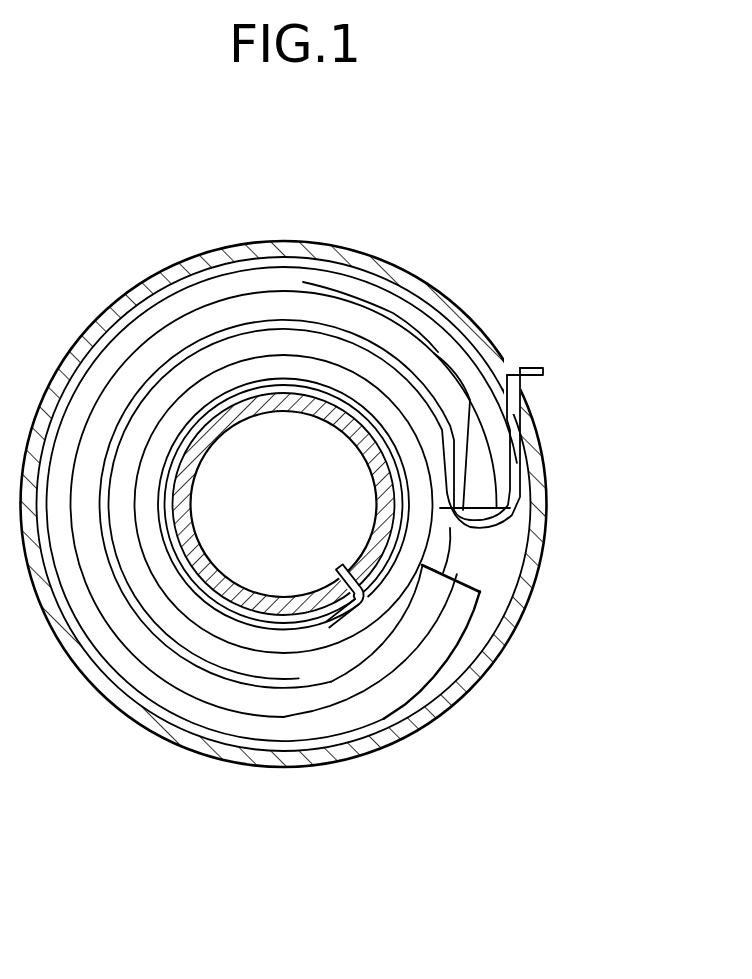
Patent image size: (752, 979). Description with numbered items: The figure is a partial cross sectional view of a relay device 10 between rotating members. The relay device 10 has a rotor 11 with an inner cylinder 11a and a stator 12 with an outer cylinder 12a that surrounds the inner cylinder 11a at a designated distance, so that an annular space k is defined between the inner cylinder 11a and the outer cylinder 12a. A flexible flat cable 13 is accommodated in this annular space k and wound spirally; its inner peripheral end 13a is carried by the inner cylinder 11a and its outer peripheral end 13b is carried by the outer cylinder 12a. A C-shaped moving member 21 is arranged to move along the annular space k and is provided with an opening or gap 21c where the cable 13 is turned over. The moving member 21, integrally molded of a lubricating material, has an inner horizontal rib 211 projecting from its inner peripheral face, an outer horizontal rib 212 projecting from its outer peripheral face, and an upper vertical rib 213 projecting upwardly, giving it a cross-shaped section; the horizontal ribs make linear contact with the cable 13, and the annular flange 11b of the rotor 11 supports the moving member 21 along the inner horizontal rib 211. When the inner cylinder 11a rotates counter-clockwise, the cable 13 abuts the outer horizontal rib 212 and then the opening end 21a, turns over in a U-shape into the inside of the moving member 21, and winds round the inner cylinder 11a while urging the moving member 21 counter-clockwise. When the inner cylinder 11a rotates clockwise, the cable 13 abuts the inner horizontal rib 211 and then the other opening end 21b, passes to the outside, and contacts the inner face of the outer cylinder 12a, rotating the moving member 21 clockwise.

The relay device 10 is at (550, 305).
The rotor 11 is at (250, 392).
The inner cylinder 11a is at (207, 420).
The annular flange 11b is at (397, 530).
The stator 12 is at (427, 273).
The outer cylinder 12a is at (338, 245).
The flexible flat cable 13 is at (392, 416).
The inner peripheral end 13a is at (343, 567).
The outer peripheral end 13b is at (540, 386).
The C-shaped moving member 21 is at (140, 668).
The opening end 21a is at (487, 525).
The opening end 21b is at (490, 603).
The opening (gap) 21c is at (482, 592).
The inner horizontal rib 211 is at (247, 648).
The outer horizontal rib 212 is at (273, 720).
The upper vertical rib 213 is at (353, 677).
The annular space k is at (430, 682).